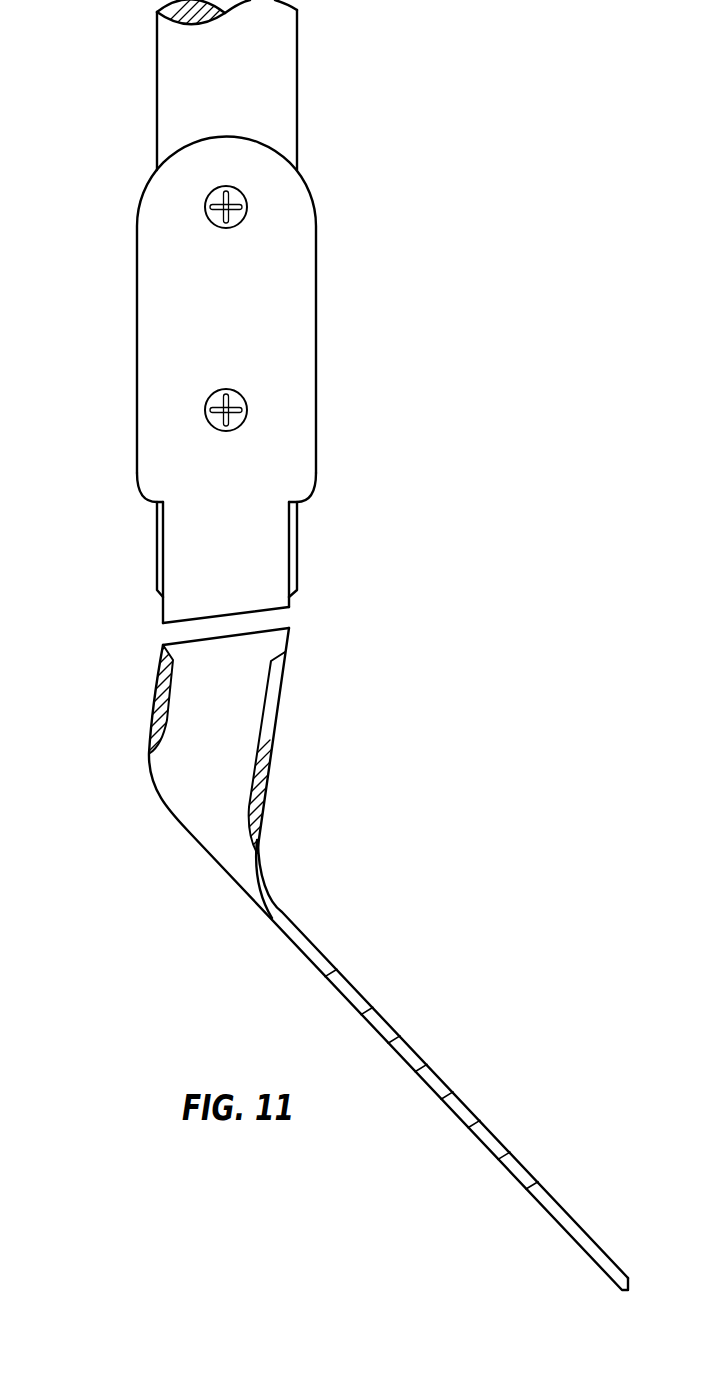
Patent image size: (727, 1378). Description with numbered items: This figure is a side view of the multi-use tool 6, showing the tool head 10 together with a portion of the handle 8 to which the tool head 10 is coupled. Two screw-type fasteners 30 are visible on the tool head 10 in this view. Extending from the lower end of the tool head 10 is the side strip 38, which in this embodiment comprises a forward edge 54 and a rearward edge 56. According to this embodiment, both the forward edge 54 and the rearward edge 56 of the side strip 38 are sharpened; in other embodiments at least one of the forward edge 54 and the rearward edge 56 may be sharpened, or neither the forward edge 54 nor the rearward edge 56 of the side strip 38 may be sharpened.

The multi-use tool 6 is at (547, 107).
The handle 8 is at (278, 75).
The tool head 10 is at (463, 358).
The screw-type fasteners 30 is at (238, 227).
The side strip 38 is at (220, 745).
The forward edge 54 is at (397, 828).
The rearward edge 56 is at (25, 773).